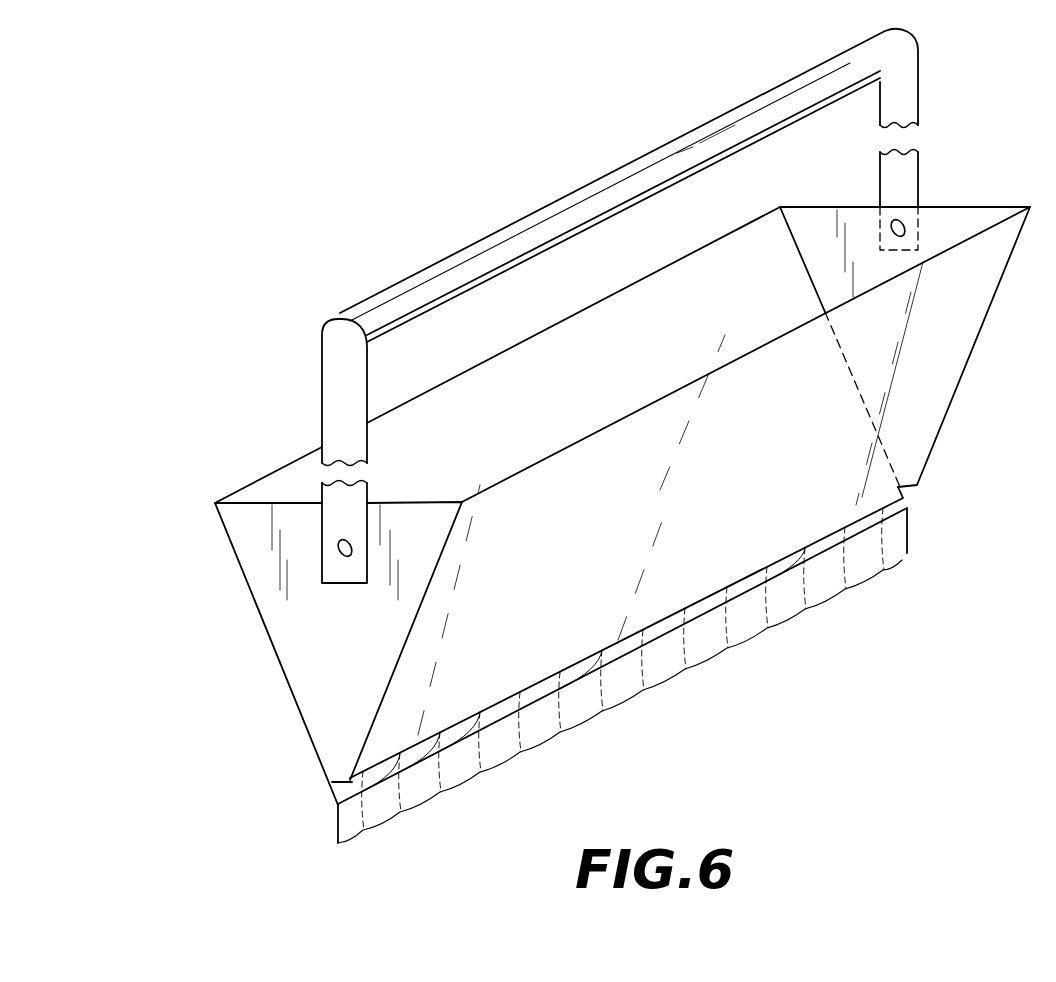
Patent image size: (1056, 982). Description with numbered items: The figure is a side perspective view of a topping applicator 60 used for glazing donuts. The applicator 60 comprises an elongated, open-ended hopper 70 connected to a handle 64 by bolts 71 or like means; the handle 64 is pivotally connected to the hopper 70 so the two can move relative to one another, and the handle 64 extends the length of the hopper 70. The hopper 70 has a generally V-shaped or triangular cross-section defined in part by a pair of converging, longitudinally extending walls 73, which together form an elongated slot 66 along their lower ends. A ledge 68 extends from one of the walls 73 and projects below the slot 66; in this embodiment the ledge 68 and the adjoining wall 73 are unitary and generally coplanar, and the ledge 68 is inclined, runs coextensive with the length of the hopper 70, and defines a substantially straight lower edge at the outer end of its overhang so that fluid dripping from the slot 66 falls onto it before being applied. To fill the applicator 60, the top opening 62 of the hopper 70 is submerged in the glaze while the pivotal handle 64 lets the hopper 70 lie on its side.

The topping applicator 60 is at (245, 290).
The top opening 62 is at (433, 425).
The handle 64 is at (583, 189).
The slot 66 is at (340, 790).
The ledge 68 is at (562, 686).
The hopper 70 is at (605, 413).
The bolts 71 is at (338, 547).
The walls 73 is at (280, 468).